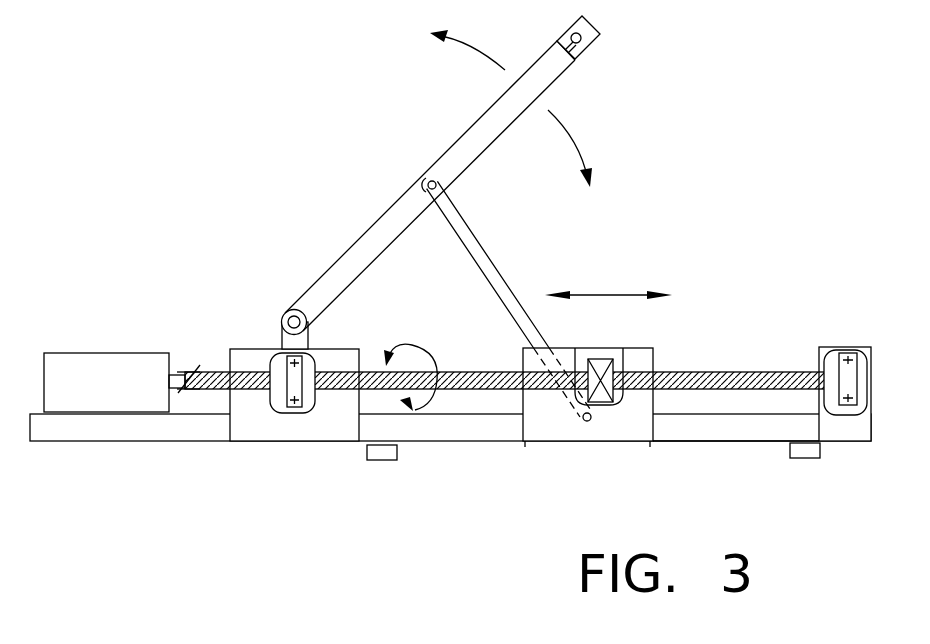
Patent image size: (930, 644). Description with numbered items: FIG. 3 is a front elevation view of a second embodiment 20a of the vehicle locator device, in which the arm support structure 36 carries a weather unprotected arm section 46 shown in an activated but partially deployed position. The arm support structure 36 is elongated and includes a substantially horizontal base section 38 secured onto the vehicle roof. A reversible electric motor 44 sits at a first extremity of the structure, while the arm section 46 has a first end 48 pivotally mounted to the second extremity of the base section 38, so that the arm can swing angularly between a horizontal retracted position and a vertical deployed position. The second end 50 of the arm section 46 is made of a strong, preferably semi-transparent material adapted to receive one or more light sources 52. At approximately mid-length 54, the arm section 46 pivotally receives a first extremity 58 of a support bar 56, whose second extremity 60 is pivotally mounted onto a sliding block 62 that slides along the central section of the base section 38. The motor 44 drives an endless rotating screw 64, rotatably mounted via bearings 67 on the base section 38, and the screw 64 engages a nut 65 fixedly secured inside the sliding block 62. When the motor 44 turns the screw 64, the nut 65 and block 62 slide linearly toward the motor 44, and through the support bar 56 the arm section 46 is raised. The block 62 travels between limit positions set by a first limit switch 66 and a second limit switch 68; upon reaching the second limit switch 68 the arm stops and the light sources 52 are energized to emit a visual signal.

The second embodiment 20a is at (160, 125).
The arm support structure 36 is at (149, 442).
The base section 38 is at (748, 441).
The reversible electric motor 44 is at (103, 353).
The arm section 46 is at (342, 255).
The first end 48 is at (293, 310).
The second end 50 is at (568, 26).
The light sources 52 is at (578, 44).
The mid-length 54 is at (430, 167).
The support bar 56 is at (490, 262).
The first extremity 58 is at (445, 192).
The second extremity 60 is at (585, 422).
The sliding block 62 is at (653, 348).
The endless rotating screw 64 is at (767, 372).
The nut 65 is at (607, 400).
The first limit switch 66 is at (805, 458).
The bearings 67 is at (300, 405).
The second limit switch 68 is at (383, 460).